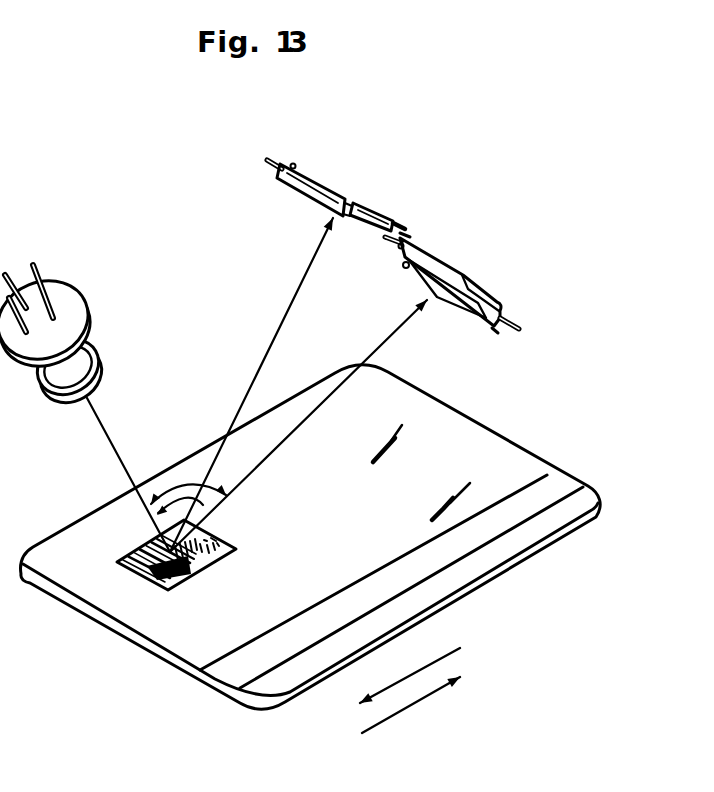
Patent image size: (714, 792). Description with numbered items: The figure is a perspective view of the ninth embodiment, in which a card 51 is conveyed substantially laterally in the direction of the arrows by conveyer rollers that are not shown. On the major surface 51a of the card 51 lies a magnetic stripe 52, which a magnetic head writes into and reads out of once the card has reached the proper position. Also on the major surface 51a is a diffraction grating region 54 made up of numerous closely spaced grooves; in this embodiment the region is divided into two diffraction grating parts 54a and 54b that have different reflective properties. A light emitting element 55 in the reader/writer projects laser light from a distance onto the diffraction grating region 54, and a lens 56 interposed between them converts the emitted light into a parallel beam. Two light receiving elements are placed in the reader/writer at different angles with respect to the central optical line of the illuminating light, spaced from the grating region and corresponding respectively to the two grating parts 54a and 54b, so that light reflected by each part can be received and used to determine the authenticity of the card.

The card 51 is at (510, 580).
The major surface 51a is at (480, 440).
The magnetic stripe 52 is at (557, 483).
The diffraction grating region 54 is at (131, 598).
The diffraction grating part 54a is at (122, 567).
The diffraction grating part 54b is at (147, 586).
The light emitting element 55 is at (73, 304).
The lens 56 is at (90, 363).